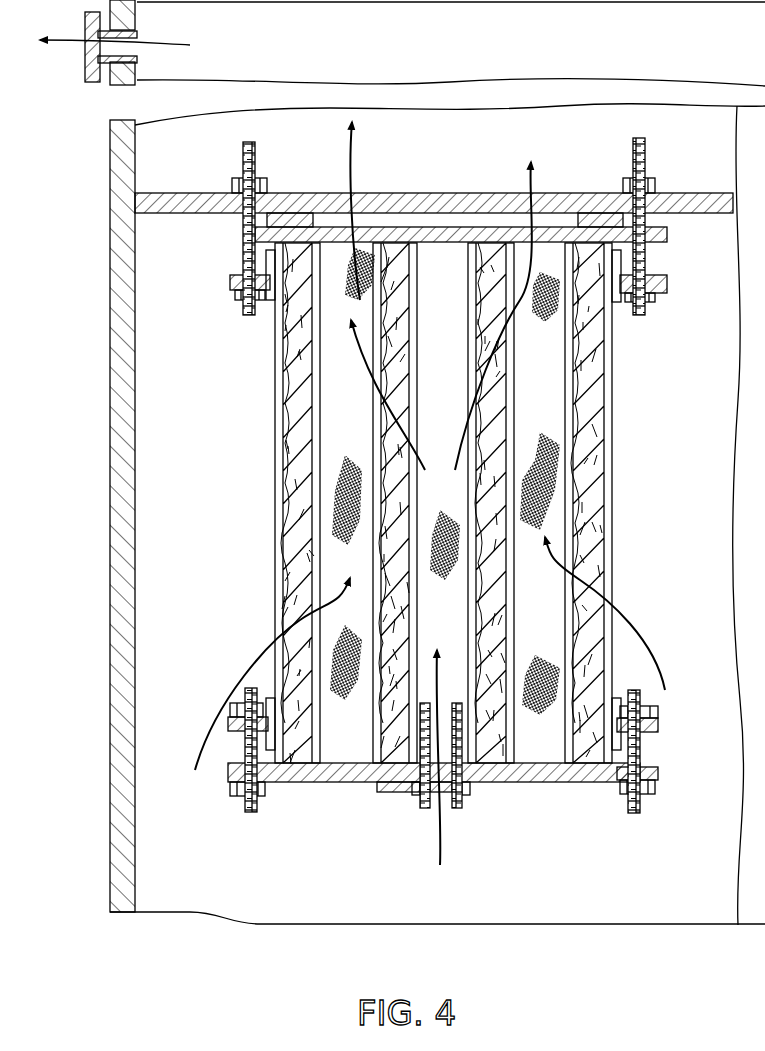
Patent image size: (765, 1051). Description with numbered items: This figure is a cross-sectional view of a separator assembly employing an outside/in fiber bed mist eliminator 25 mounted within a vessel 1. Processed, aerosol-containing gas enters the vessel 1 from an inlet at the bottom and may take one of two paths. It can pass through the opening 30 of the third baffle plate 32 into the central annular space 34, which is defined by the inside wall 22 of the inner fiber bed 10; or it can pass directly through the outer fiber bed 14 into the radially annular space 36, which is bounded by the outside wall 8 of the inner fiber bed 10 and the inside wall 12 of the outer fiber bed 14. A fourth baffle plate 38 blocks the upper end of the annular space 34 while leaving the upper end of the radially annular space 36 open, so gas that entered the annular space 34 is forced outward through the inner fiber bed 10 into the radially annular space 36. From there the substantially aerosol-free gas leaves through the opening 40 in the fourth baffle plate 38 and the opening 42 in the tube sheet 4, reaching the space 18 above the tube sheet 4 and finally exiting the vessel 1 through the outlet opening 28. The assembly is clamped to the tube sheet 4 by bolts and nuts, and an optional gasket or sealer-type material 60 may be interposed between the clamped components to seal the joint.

The vessel 1 is at (98, 452).
The tube sheet 4 is at (688, 203).
The outside wall of inner fiber bed 8 is at (374, 735).
The inner fiber bed 10 is at (500, 760).
The inside wall of outer fiber bed 12 is at (338, 270).
The outer fiber bed 14 is at (297, 758).
The space 18 is at (434, 41).
The inside wall of inner fiber bed 22 is at (420, 302).
The outside/in fiber bed mist eliminator 25 is at (633, 410).
The outlet opening 28 is at (86, 46).
The opening of third baffle plate 30 is at (420, 790).
The third baffle plate 32 is at (558, 780).
The annular space 34 is at (453, 308).
The radially annular space 36 is at (360, 753).
The fourth baffle plate 38 is at (668, 233).
The opening in fourth baffle plate 40 is at (547, 307).
The opening in tube sheet 42 is at (319, 252).
The gasket or sealer-type material 60 is at (281, 213).